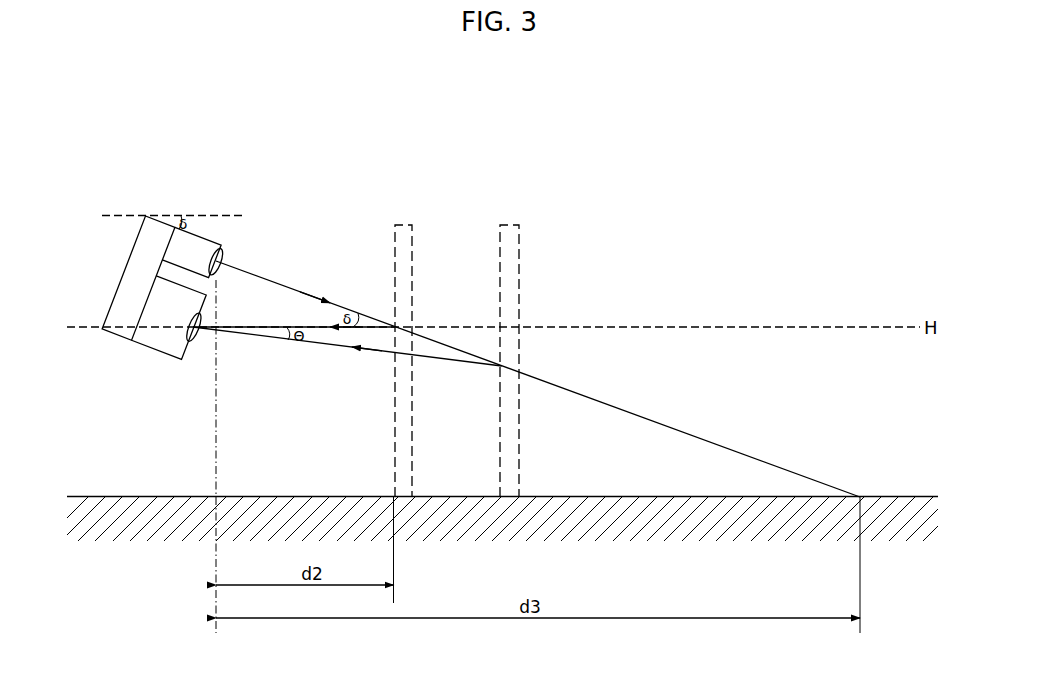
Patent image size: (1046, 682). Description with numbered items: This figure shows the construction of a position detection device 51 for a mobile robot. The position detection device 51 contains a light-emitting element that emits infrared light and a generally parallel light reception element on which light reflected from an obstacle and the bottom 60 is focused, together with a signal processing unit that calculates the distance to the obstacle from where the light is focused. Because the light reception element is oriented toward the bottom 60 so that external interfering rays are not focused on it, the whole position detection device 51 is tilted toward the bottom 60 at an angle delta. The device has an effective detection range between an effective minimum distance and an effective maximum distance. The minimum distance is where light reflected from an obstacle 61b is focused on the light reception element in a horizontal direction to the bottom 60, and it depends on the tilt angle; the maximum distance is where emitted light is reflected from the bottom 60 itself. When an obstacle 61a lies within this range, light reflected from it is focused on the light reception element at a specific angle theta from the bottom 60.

The position detection device 51 is at (106, 241).
The bottom 60 is at (888, 513).
The obstacle 61a is at (508, 235).
The obstacle 61b is at (402, 235).